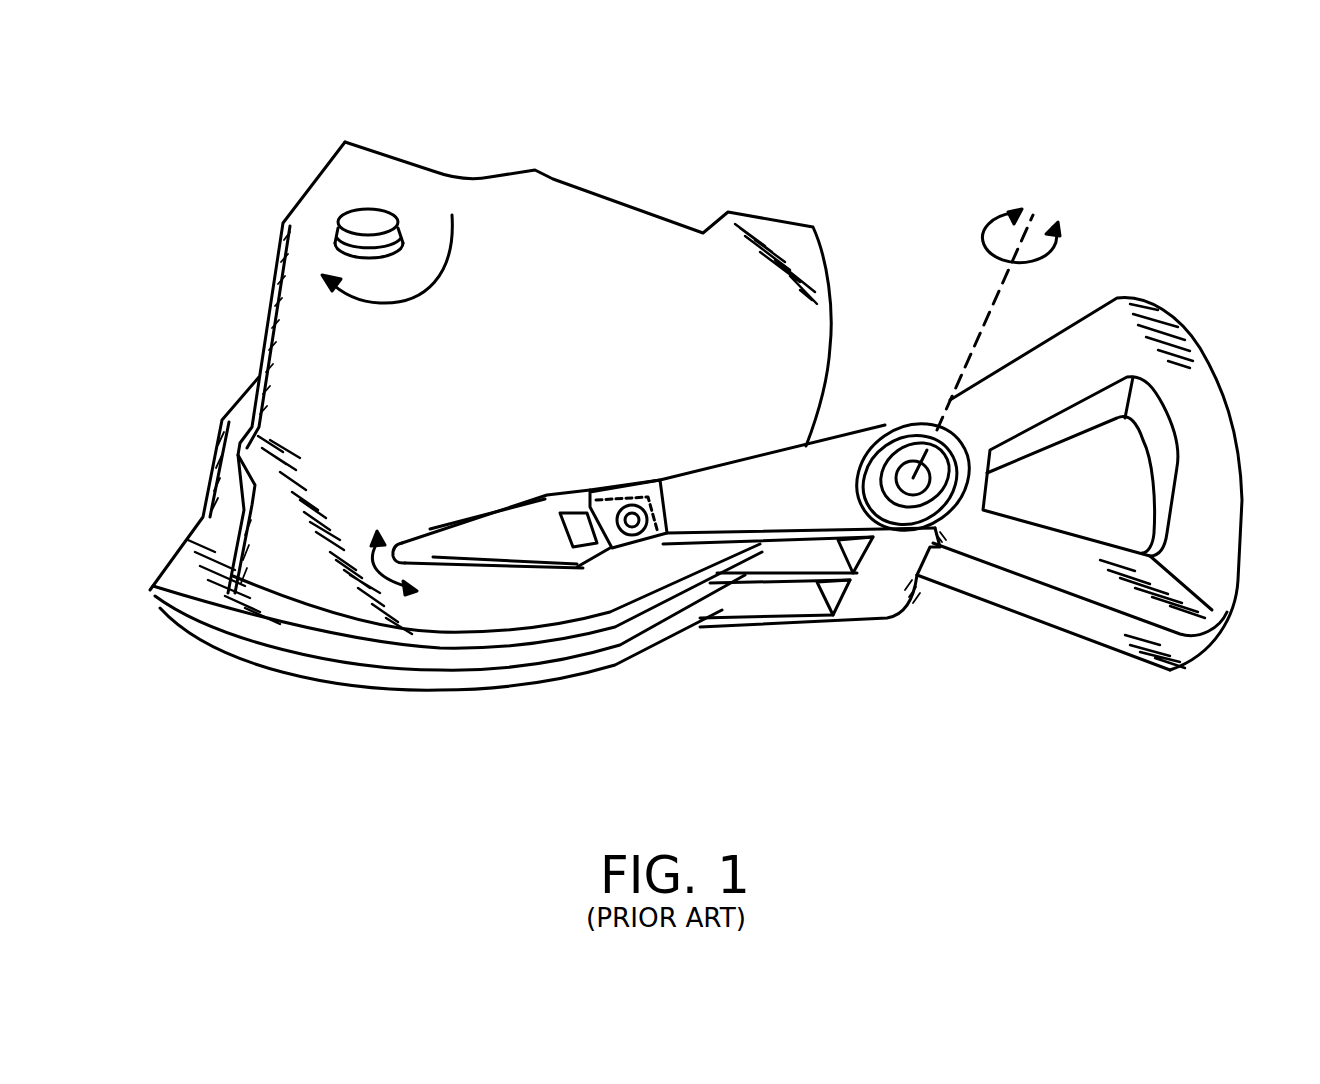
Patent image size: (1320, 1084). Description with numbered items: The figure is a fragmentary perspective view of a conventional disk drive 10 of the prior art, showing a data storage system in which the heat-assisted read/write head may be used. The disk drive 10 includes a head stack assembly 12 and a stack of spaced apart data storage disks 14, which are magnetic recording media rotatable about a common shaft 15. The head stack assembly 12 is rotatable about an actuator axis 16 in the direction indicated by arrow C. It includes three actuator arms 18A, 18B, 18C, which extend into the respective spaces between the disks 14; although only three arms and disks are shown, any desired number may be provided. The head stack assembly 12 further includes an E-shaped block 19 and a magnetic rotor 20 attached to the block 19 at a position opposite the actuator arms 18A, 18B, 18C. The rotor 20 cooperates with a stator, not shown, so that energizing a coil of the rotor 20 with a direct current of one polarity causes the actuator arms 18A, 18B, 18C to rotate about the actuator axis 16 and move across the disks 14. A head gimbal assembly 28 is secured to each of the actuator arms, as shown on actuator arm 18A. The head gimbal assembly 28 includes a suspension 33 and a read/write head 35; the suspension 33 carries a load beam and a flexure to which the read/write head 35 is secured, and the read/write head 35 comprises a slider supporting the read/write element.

The disk drive 10 is at (672, 94).
The head stack assembly 12 is at (806, 552).
The data storage disks 14 is at (570, 281).
The common shaft 15 is at (352, 217).
The actuator axis 16 is at (1003, 277).
The actuator arm 18A is at (764, 454).
The actuator arm 18B is at (762, 577).
The actuator arm 18C is at (793, 618).
The E-shaped block 19 is at (890, 605).
The magnetic rotor 20 is at (1097, 622).
The head gimbal assembly 28 is at (498, 484).
The suspension 33 is at (533, 553).
The read/write head 35 is at (392, 562).